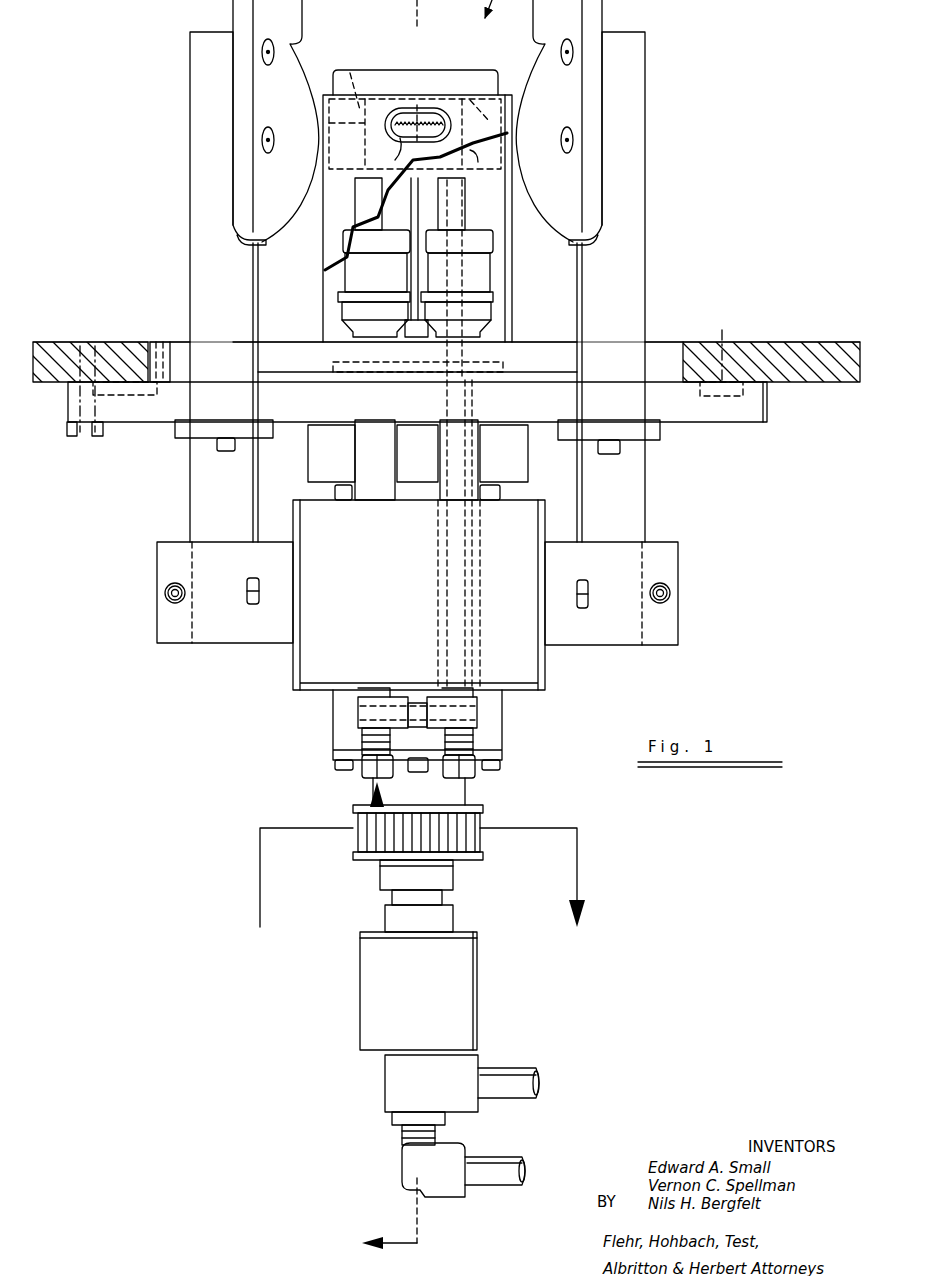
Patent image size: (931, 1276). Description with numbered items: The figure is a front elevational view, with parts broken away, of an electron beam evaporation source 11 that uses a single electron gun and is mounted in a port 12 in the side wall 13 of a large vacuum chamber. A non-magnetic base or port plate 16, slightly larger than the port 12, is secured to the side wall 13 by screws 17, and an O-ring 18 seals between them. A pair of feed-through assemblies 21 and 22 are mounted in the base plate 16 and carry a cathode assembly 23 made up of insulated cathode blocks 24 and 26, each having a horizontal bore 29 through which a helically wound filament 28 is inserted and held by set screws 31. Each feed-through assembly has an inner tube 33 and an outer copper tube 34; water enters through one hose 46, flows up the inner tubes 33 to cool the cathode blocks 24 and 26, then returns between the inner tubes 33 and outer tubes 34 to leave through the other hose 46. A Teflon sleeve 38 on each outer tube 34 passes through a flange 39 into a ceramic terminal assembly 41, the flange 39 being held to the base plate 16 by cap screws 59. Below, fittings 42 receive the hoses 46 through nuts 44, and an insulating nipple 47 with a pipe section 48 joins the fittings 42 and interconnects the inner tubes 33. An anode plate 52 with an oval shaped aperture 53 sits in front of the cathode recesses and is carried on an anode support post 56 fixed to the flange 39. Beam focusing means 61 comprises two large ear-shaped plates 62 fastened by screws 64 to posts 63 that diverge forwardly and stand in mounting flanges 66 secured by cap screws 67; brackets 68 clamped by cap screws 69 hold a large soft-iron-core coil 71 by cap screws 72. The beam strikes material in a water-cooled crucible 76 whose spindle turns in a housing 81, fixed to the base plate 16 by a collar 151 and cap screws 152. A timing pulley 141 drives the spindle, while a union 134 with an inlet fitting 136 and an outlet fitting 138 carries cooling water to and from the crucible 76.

The electron beam evaporation source 11 is at (185, 710).
The opening or port 12 is at (678, 345).
The side wall 13 is at (833, 376).
The base or port plate 16 is at (151, 412).
The screws 17 is at (72, 436).
The O-ring 18 is at (738, 345).
The feed-through assembly 21 is at (350, 452).
The feed-through assembly 22 is at (492, 458).
The cathode assembly 23 is at (402, 95).
The cathode block 24 is at (360, 175).
The cathode block 26 is at (476, 155).
The filament 28 is at (430, 118).
The horizontal bore 29 is at (362, 150).
The set screws 31 is at (495, 112).
The inner tube 33 is at (472, 270).
The outer tube 34 is at (470, 573).
The sleeve 38 is at (437, 563).
The flange 39 is at (338, 352).
The ceramic terminal assembly 41 is at (357, 273).
The fitting 42 is at (360, 712).
The nut 44 is at (365, 770).
The hose 46 is at (310, 838).
The nipple 47 is at (415, 700).
The pipe section 48 is at (416, 772).
The anode plate 52 is at (409, 110).
The oval shaped aperture 53 is at (400, 138).
The anode support post 56 is at (410, 225).
The cap screws 59 is at (416, 333).
The beam focusing means 61 is at (233, 167).
The ear-shaped plates 62 is at (281, 73).
The pole pieces or posts 63 is at (201, 250).
The screws 64 is at (268, 66).
The mounting flanges 66 is at (237, 427).
The cap screws 67 is at (214, 443).
The brackets 68 is at (272, 633).
The cap screws 69 is at (172, 598).
The coil 71 is at (400, 616).
The cap screws 72 is at (247, 600).
The crucible 76 is at (476, 68).
The housing 81 is at (505, 735).
The union 134 is at (432, 1002).
The fitting 136 is at (442, 1092).
The fitting 138 is at (451, 1179).
The timing pulley 141 is at (372, 860).
The collar 151 is at (533, 443).
The cap screws 152 is at (338, 490).